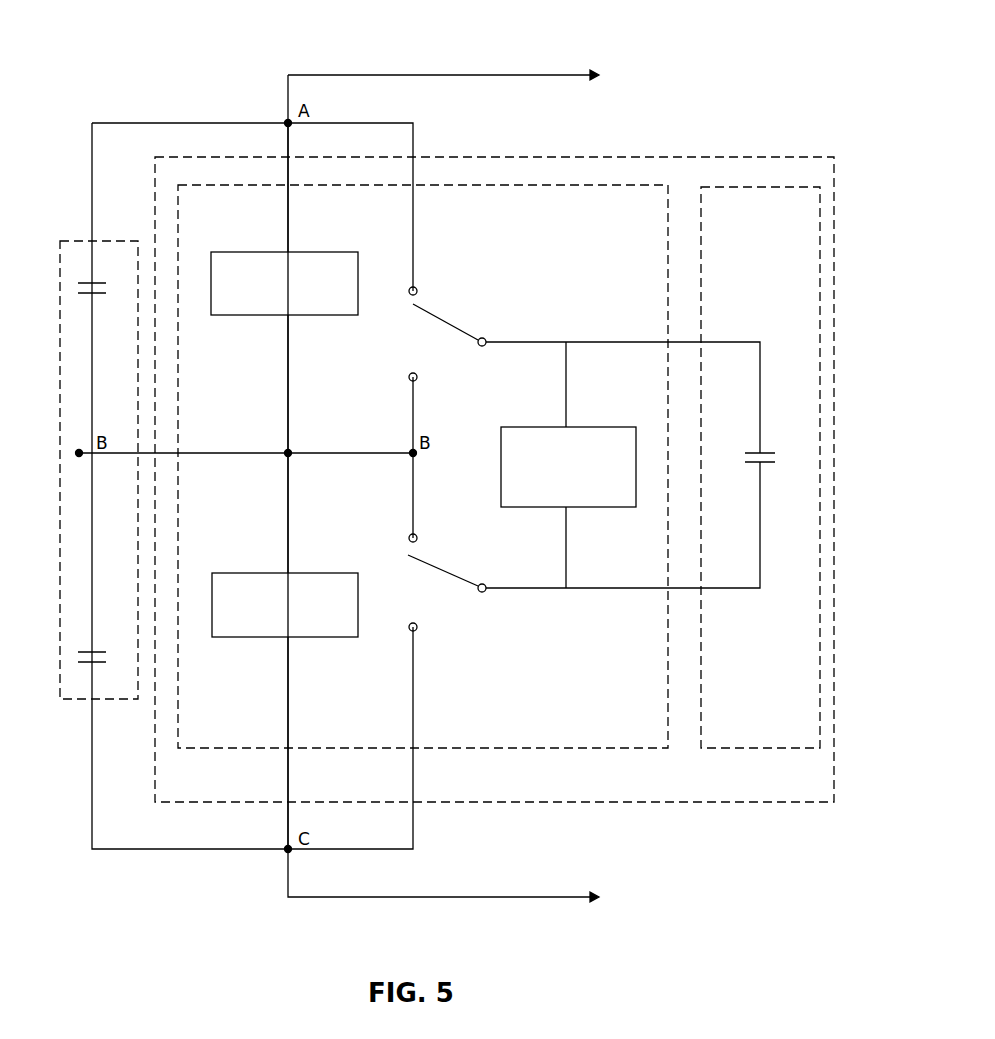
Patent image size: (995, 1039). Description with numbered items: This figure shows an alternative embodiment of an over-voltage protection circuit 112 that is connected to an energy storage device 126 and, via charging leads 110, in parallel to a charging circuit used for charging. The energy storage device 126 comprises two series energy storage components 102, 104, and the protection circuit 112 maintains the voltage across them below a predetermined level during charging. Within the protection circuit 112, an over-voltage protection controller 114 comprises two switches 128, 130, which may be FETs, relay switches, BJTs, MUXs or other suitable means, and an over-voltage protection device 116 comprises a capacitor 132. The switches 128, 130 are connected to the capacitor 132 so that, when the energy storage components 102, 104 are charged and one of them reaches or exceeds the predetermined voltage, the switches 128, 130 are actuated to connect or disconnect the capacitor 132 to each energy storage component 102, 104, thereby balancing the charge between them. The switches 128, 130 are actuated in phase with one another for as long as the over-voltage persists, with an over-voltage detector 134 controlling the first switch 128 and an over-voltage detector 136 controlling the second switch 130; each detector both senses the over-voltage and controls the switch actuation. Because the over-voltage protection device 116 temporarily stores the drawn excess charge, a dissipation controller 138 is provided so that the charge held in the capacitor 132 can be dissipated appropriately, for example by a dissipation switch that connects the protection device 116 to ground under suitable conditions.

The charging leads 110 is at (469, 486).
The over-voltage protection circuit 112 is at (775, 152).
The over-voltage protection controller 114 is at (266, 756).
The over-voltage protection device 116 is at (766, 756).
The energy storage device 126 is at (120, 235).
The energy storage component 102 is at (103, 302).
The energy storage component 104 is at (102, 643).
The switch 128 is at (463, 302).
The switch 130 is at (455, 554).
The capacitor 132 is at (773, 446).
The over-voltage detector 134 is at (284, 283).
The over-voltage detector 136 is at (285, 605).
The dissipation controller 138 is at (568, 467).